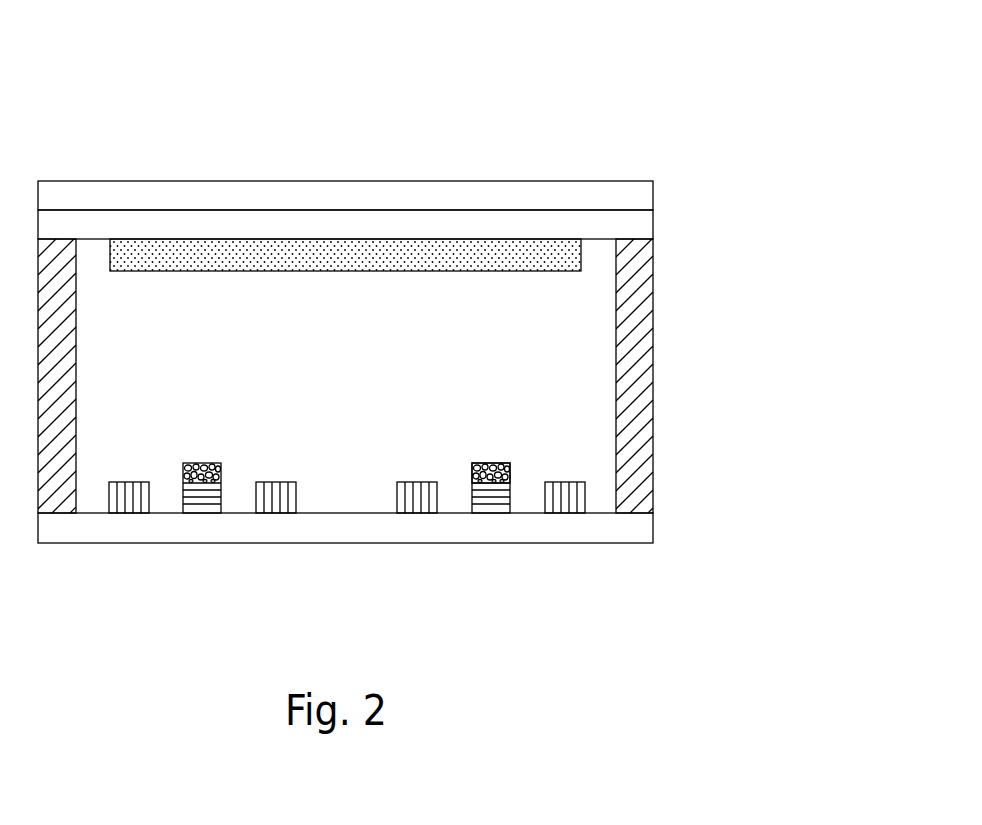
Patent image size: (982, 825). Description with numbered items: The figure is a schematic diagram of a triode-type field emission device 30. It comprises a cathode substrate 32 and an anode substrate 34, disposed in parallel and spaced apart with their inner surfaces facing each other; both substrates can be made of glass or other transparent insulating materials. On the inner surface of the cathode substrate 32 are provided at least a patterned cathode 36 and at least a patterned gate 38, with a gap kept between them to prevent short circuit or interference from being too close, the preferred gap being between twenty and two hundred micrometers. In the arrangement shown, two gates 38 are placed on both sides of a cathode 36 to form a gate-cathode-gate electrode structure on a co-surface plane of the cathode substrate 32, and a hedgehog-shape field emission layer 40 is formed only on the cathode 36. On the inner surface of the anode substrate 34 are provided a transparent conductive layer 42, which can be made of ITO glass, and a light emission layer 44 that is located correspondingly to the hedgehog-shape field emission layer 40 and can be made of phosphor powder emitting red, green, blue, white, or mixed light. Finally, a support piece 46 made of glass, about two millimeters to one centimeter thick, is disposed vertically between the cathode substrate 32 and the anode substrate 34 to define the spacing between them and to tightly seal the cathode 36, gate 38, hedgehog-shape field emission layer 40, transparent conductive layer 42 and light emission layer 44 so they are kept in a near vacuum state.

The triode-type field emission device 30 is at (171, 154).
The cathode substrate 32 is at (643, 527).
The anode substrate 34 is at (637, 194).
The cathode 36 is at (494, 513).
The gate 38 is at (420, 513).
The hedgehog-shape field emission layer 40 is at (505, 472).
The transparent conductive layer 42 is at (643, 227).
The light emission layer 44 is at (572, 260).
The support piece 46 is at (640, 388).